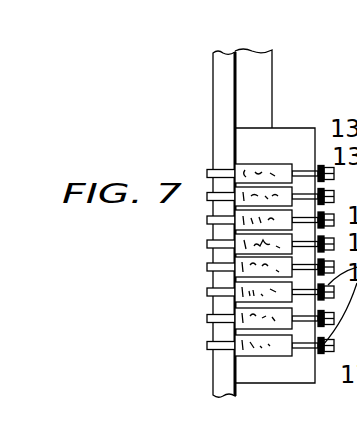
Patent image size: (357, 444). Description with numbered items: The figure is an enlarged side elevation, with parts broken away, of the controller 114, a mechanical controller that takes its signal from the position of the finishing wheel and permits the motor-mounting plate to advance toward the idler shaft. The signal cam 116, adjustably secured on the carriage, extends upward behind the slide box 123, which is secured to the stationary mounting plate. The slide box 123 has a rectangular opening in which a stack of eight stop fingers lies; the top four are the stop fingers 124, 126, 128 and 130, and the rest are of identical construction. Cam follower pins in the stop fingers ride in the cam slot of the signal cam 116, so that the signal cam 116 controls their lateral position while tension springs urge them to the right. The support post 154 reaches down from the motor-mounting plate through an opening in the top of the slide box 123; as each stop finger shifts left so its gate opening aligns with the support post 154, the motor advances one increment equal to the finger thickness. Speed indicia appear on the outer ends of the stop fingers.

The controller 114 is at (142, 310).
The signal cam 116 is at (217, 384).
The slide box 123 is at (315, 137).
The stop finger 124 is at (253, 167).
The stop finger 126 is at (248, 200).
The stop finger 128 is at (248, 222).
The stop finger 130 is at (248, 245).
The support post 154 is at (257, 67).